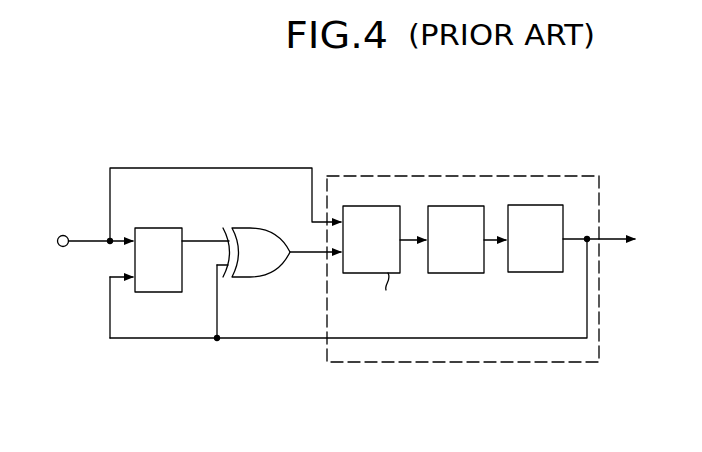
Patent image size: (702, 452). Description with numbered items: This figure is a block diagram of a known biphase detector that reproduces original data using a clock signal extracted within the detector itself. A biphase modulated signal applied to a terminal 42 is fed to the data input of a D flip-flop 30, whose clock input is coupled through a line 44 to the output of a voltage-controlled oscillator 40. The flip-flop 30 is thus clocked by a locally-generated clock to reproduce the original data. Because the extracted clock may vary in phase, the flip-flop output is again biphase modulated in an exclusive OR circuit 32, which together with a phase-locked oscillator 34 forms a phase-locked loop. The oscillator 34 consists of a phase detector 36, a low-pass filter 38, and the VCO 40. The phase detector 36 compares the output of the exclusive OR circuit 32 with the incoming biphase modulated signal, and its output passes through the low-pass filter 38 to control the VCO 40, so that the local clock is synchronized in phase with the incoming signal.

The D flip-flop 30 is at (160, 228).
The exclusive OR circuit 32 is at (254, 228).
The phase-locked oscillator 34 is at (457, 362).
The phase detector 36 is at (352, 273).
The low-pass filter 38 is at (473, 273).
The voltage-controlled oscillator 40 is at (553, 272).
The terminal 42 is at (63, 247).
The line 44 is at (272, 339).